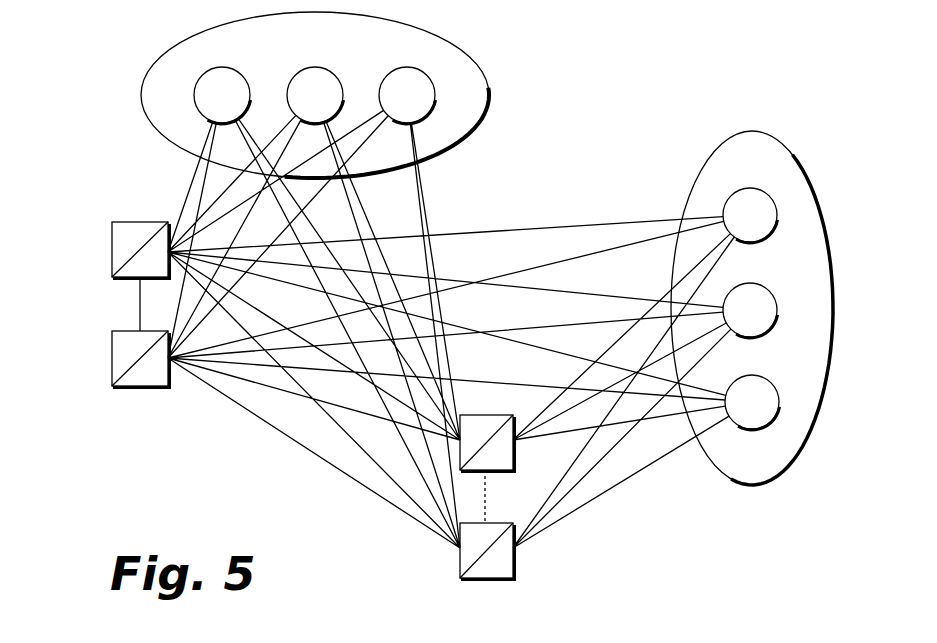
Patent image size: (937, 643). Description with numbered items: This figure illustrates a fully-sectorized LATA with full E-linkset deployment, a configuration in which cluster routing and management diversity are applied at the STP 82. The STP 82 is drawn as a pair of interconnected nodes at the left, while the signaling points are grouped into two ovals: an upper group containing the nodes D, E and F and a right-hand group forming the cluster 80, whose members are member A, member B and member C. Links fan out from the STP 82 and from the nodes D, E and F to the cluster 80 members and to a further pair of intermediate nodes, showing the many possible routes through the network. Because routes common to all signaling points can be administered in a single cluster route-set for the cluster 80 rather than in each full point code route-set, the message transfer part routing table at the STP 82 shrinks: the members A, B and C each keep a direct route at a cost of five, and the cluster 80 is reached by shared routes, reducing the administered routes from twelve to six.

The cluster 80 is at (751, 348).
The STP 82 is at (112, 230).
The member A is at (750, 215).
The member B is at (750, 310).
The member C is at (752, 402).
The node D is at (222, 95).
The node E is at (315, 95).
The node F is at (407, 95).